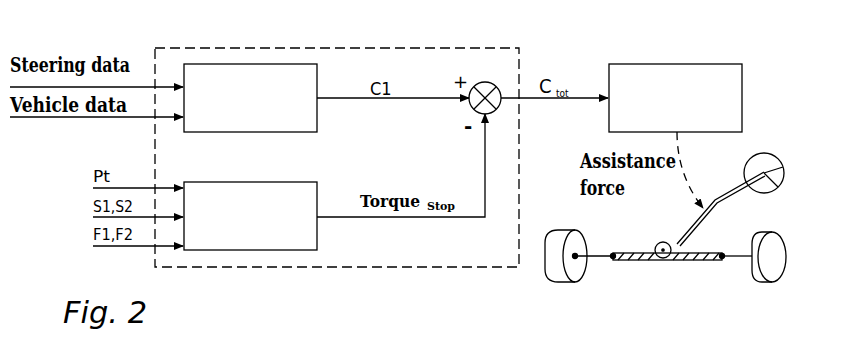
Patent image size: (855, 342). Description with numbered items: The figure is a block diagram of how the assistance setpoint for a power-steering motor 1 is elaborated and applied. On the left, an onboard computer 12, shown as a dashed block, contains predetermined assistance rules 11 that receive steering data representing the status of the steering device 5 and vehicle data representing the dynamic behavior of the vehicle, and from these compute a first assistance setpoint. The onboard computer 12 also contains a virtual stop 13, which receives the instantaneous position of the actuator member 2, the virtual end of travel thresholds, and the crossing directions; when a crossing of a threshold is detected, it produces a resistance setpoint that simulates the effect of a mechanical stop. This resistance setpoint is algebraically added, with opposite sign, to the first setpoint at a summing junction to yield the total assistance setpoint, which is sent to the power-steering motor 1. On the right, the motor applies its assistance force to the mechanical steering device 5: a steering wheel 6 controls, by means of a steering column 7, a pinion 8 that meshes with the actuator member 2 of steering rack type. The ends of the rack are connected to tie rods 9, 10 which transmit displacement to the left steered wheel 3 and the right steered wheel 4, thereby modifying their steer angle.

The power-steering motor 1 is at (703, 75).
The actuator member 2 is at (630, 262).
The left steered wheel 3 is at (783, 270).
The right steered wheel 4 is at (560, 272).
The steering device 5 is at (746, 219).
The steering wheel 6 is at (767, 153).
The steering column 7 is at (724, 187).
The pinion 8 is at (663, 262).
The tie rod 9 is at (733, 262).
The tie rod 10 is at (600, 250).
The assistance rules 11 is at (278, 75).
The onboard computer 12 is at (387, 48).
The virtual stop 13 is at (265, 192).